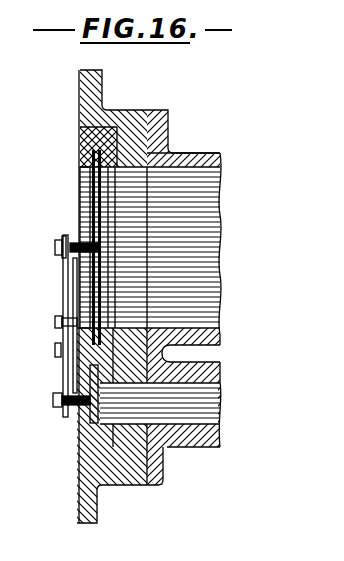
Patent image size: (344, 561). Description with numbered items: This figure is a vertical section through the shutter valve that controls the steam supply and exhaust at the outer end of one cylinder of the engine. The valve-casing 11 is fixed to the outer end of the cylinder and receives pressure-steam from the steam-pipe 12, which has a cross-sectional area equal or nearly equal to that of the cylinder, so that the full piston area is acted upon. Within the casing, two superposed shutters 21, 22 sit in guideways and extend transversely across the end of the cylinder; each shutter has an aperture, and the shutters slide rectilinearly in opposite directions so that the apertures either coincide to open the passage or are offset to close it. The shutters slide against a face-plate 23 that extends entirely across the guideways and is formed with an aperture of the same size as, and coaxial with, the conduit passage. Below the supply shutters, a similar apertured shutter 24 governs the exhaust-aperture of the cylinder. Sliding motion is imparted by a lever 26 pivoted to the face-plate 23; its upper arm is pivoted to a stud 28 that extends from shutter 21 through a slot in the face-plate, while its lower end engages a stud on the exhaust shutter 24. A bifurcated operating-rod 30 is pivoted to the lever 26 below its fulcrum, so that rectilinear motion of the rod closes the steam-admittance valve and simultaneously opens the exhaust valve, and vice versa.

The valve-casing 11 is at (142, 97).
The steam-pipe 12 is at (206, 135).
The shutter 21 is at (95, 184).
The shutter 22 is at (102, 219).
The face-plate 23 is at (84, 160).
The shutter 24 is at (84, 437).
The lever 26 is at (64, 299).
The stud 28 is at (80, 242).
The bifurcated operating-rod 30 is at (57, 358).